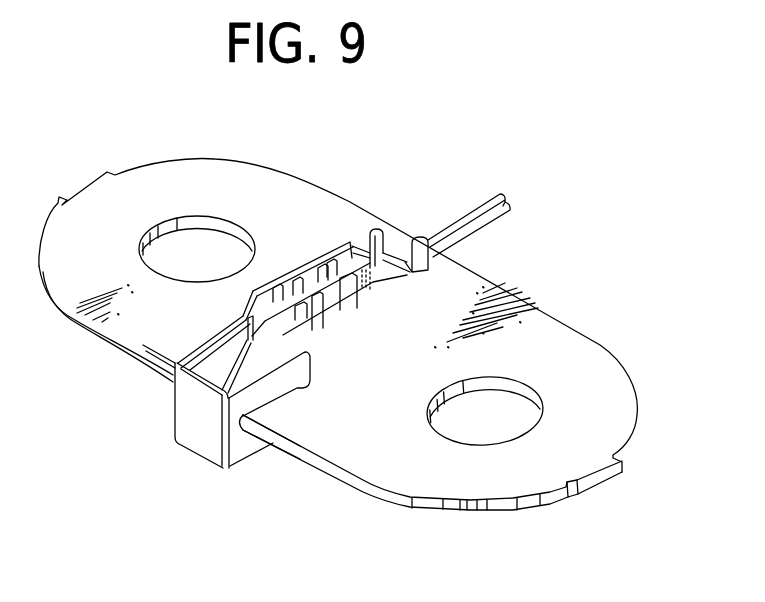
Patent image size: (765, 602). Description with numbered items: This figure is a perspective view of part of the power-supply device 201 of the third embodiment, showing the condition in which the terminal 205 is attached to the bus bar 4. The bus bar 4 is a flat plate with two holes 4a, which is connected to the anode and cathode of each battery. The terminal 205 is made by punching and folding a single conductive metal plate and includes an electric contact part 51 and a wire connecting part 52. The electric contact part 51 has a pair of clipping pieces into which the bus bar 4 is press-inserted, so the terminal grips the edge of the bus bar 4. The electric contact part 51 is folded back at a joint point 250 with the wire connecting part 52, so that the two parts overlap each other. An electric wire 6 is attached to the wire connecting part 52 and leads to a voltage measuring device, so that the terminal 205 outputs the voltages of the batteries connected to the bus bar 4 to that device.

The power-supply device 201 is at (580, 200).
The bus bar 4 is at (603, 402).
The hole 4a is at (208, 230).
The terminal 205 is at (332, 242).
The wire connecting part 52 is at (237, 310).
The electric wire 6 is at (445, 218).
The joint point 250 is at (193, 385).
The electric contact part 51 is at (258, 453).